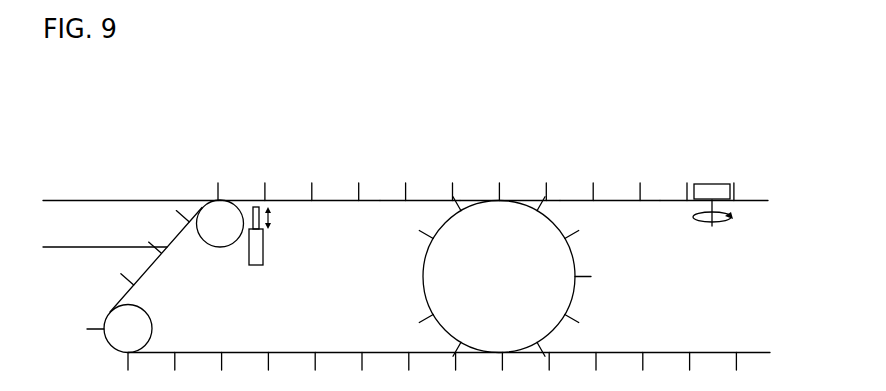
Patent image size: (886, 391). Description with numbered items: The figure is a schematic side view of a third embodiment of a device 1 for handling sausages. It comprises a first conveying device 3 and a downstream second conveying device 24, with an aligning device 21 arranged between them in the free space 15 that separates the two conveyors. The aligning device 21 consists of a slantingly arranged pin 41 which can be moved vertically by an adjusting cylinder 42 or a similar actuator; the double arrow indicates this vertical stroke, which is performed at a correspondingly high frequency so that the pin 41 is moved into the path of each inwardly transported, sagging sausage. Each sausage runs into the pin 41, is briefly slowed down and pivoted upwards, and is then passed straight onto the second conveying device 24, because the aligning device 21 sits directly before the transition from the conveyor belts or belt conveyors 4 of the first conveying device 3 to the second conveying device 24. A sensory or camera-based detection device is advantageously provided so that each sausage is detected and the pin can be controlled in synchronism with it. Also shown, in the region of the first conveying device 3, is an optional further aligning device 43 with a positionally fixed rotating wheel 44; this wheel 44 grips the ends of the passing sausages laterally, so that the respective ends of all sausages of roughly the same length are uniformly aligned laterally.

The device 1 is at (491, 134).
The first conveying device 3 is at (666, 171).
The conveyor belts 4 is at (423, 198).
The free space 15 is at (610, 218).
The aligning device 21 is at (279, 231).
The second conveying device 24 is at (113, 186).
The pin 41 is at (254, 206).
The adjusting cylinder 42 is at (254, 266).
The aligning device 43 is at (723, 181).
The wheel 44 is at (719, 186).